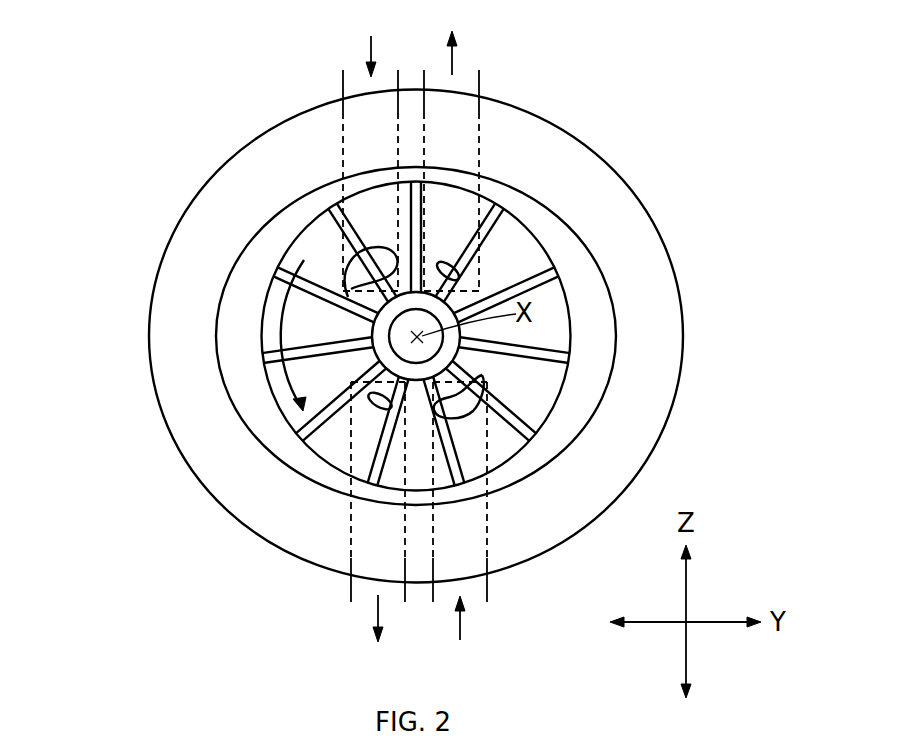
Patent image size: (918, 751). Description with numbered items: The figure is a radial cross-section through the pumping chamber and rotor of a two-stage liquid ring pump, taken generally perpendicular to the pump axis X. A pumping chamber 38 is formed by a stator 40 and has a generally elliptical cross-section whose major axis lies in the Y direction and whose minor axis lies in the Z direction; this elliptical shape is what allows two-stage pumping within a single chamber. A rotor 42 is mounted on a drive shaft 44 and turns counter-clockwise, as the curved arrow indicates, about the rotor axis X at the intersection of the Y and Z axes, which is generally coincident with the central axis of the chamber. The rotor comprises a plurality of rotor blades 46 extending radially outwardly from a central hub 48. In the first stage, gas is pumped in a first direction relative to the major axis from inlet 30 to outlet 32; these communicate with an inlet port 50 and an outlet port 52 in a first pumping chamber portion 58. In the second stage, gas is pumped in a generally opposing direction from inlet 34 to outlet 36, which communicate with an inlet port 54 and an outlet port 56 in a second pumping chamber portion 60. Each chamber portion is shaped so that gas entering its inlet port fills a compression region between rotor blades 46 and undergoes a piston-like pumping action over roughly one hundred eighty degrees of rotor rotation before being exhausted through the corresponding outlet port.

The inlet 30 is at (371, 36).
The outlet 32 is at (376, 636).
The inlet 34 is at (462, 640).
The outlet 36 is at (455, 36).
The pumping chamber 38 is at (590, 422).
The stator 40 is at (620, 205).
The rotor 42 is at (273, 395).
The drive shaft 44 is at (430, 322).
The rotor blades 46 is at (313, 425).
The central hub 48 is at (452, 352).
The inlet port 50 is at (378, 246).
The outlet port 52 is at (374, 410).
The inlet port 54 is at (470, 421).
The outlet port 56 is at (442, 265).
The first pumping chamber portion 58 is at (237, 328).
The second pumping chamber portion 60 is at (593, 322).